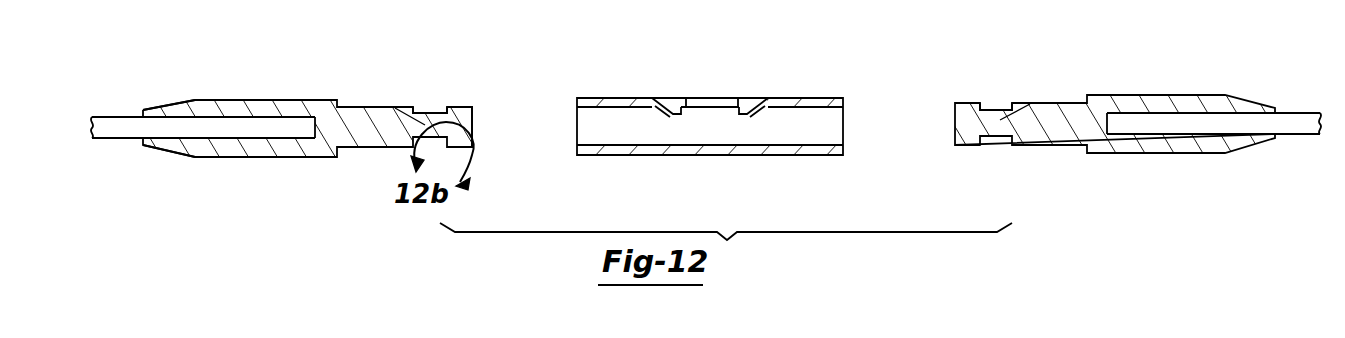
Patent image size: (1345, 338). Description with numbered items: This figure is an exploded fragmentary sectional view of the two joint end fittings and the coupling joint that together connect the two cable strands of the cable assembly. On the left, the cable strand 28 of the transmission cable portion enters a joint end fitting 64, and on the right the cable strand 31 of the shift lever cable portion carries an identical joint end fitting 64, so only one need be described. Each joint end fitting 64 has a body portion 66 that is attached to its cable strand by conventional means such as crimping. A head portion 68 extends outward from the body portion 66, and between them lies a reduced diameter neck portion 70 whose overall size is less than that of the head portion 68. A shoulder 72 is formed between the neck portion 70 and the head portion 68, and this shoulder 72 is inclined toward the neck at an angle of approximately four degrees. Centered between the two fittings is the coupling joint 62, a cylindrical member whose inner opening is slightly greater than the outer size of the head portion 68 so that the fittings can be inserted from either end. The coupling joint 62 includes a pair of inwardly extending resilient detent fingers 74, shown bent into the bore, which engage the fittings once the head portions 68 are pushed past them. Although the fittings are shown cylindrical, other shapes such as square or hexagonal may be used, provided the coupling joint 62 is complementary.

The cable strand 28 is at (125, 127).
The cable strand 31 is at (1298, 122).
The coupling joint 62 is at (773, 152).
The joint end fitting 64 is at (303, 97).
The body portion 66 is at (235, 107).
The head portion 68 is at (465, 117).
The neck portion 70 is at (423, 125).
The shoulder 72 is at (443, 110).
The resilient detent fingers 74 is at (752, 105).